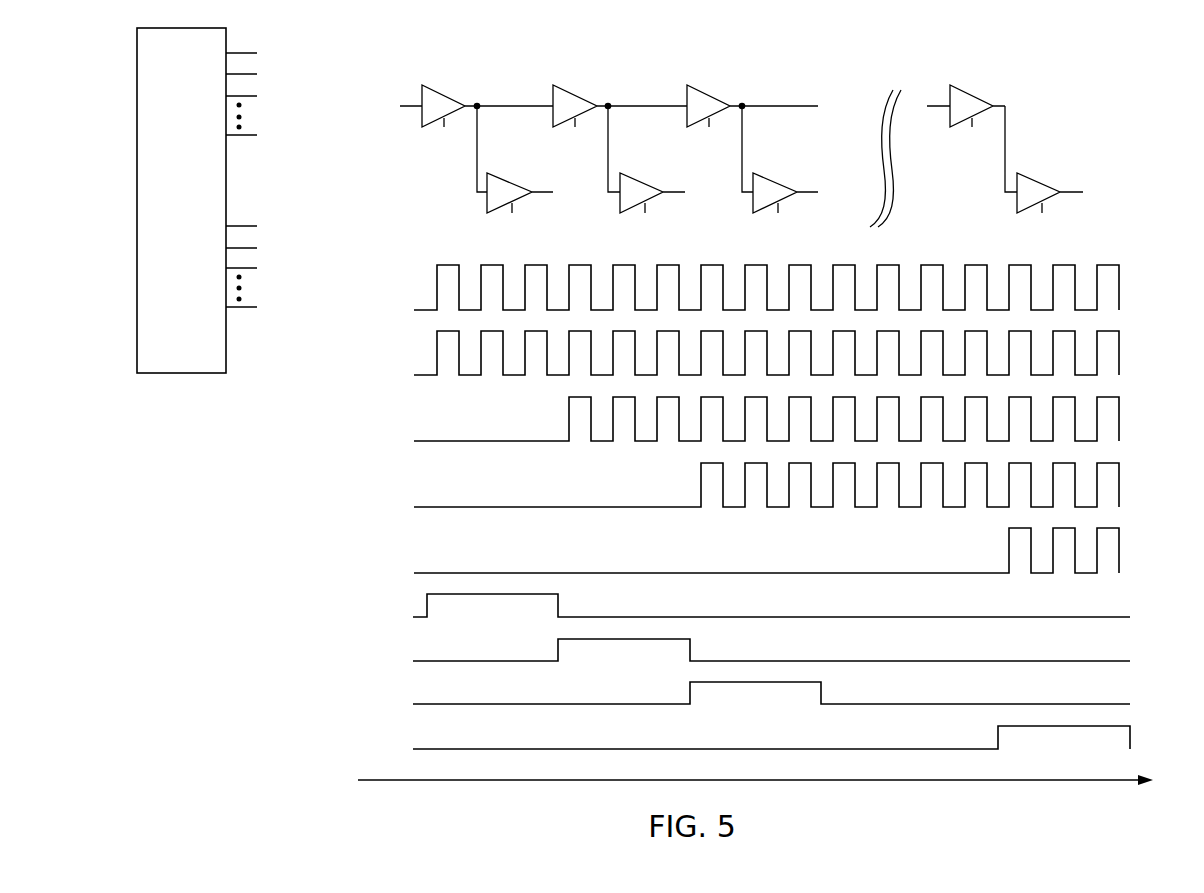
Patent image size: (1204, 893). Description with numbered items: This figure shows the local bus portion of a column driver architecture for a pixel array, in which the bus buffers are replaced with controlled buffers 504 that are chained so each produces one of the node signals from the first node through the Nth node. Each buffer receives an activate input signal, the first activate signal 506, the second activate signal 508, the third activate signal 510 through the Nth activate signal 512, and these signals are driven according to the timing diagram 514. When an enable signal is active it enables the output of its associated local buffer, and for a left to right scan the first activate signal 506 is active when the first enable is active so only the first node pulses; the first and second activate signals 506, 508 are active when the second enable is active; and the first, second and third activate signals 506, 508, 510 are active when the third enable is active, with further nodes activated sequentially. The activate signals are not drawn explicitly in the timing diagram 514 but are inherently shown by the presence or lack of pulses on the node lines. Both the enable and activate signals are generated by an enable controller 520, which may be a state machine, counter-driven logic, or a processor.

The buffers 504 is at (968, 102).
The PSEN_1 506 is at (444, 119).
The PSEN_2 508 is at (577, 119).
The PSEN_3 510 is at (709, 119).
The PSEN_N 512 is at (973, 119).
The timing diagram 514 is at (283, 603).
The enable controller 520 is at (188, 363).